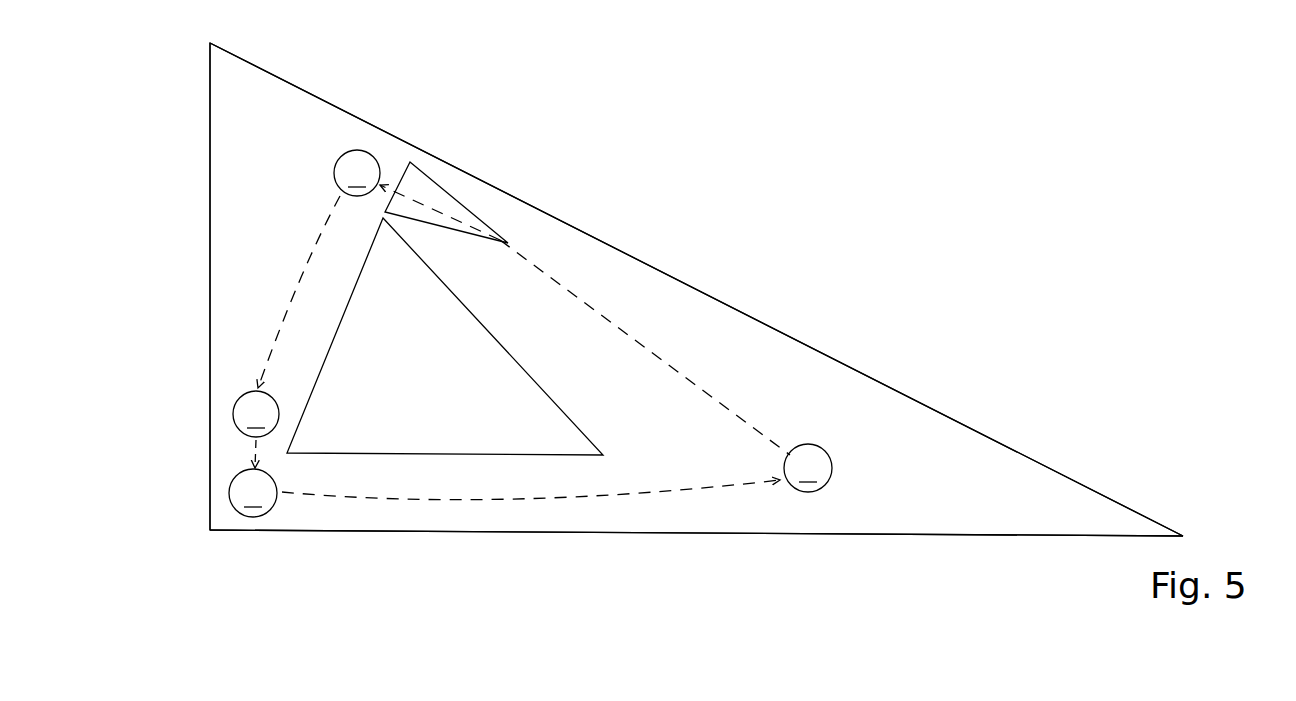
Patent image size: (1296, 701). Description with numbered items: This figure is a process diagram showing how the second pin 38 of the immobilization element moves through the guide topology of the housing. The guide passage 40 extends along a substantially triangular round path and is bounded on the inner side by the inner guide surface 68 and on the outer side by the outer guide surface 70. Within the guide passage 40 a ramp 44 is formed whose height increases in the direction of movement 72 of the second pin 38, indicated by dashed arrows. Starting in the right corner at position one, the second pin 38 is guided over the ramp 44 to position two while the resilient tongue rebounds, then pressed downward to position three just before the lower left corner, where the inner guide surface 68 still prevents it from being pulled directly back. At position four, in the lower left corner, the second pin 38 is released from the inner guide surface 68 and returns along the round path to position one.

The second pin 38 is at (362, 150).
The guide passage 40 is at (985, 487).
The ramp 44 is at (443, 190).
The inner guide surface 68 is at (330, 330).
The outer guide surface 70 is at (212, 202).
The direction of movement 72 is at (293, 280).